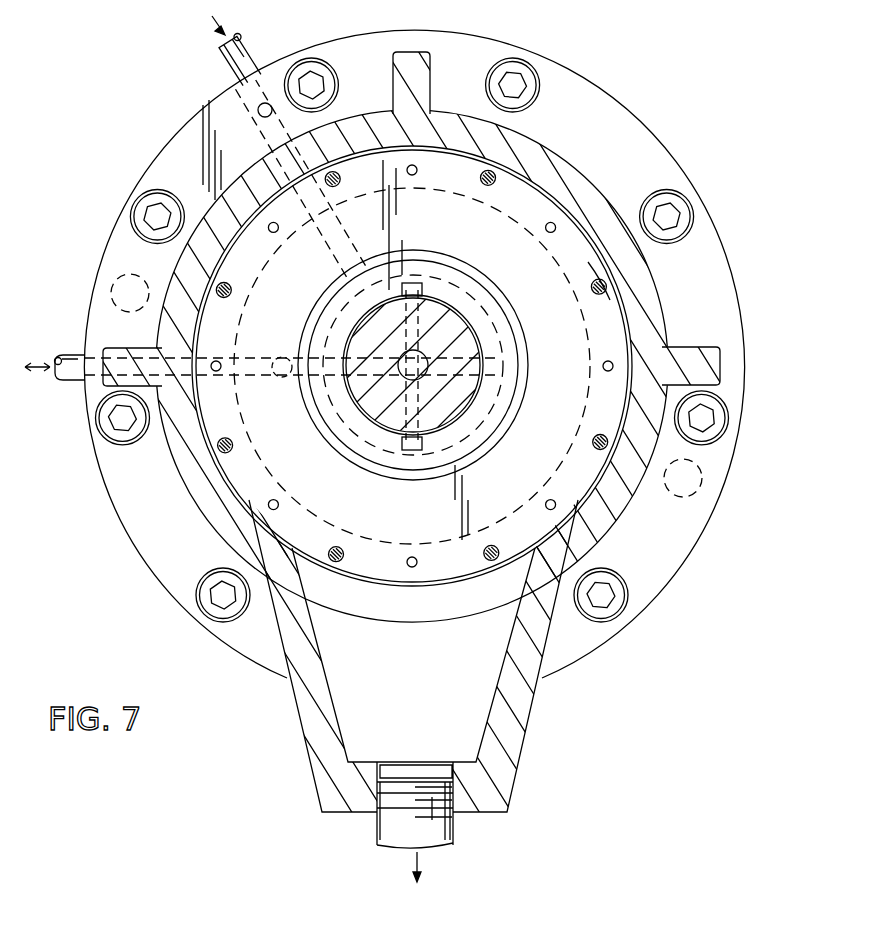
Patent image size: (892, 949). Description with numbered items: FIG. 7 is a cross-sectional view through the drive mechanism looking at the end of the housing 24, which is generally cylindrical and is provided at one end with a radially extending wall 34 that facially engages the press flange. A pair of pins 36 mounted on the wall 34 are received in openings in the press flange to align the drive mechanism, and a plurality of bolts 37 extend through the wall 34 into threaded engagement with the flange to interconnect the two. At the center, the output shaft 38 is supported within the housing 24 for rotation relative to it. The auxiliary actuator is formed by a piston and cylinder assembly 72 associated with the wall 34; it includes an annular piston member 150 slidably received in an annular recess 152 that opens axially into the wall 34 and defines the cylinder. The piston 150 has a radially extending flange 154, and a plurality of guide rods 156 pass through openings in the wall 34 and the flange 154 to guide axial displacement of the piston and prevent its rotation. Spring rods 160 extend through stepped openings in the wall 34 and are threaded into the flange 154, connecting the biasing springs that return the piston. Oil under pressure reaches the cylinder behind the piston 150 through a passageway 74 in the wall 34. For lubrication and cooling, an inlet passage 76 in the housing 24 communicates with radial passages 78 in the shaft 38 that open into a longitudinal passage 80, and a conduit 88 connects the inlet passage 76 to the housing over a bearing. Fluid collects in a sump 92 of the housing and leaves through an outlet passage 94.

The housing 24 is at (612, 510).
The radially extending wall 34 is at (583, 87).
The pins 36 is at (113, 288).
The bolts 37 is at (517, 70).
The output shaft 38 is at (452, 297).
The piston and cylinder assembly 72 is at (527, 203).
The passageway 74 is at (254, 358).
The inlet passage 76 is at (262, 130).
The radial passages 78 is at (432, 356).
The longitudinal passage 80 is at (424, 374).
The conduit 88 is at (258, 113).
The sump 92 is at (430, 729).
The outlet passage 94 is at (453, 826).
The annular piston member 150 is at (566, 336).
The annular recess 152 is at (483, 450).
The radially extending flange 154 is at (580, 258).
The guide rods 156 is at (607, 287).
The spring rods 160 is at (414, 176).